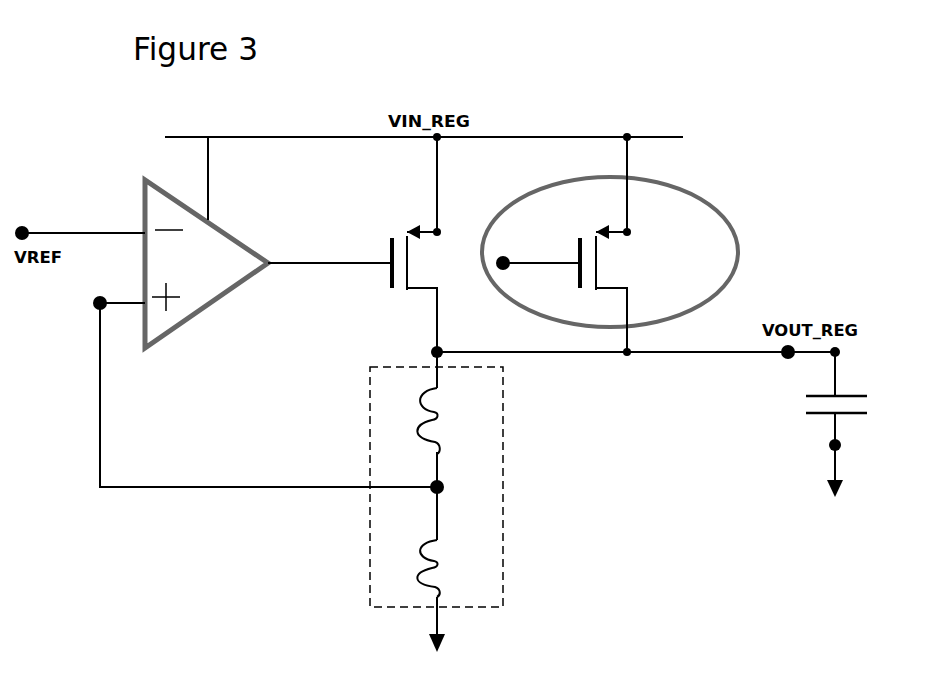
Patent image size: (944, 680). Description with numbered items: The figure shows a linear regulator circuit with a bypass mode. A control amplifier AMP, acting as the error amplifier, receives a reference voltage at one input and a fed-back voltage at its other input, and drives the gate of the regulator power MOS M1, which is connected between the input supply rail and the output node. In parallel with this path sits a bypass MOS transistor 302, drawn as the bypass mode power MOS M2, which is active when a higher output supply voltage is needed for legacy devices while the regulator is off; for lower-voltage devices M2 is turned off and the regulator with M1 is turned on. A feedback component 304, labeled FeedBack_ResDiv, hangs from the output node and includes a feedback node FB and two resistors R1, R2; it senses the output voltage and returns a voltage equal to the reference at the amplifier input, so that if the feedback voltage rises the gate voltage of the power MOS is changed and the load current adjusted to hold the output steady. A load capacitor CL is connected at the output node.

The bypass MOS transistor 302 is at (669, 233).
The feedback component 304 is at (434, 502).
The regulator power MOS M1 is at (423, 244).
The bypass mode power MOS M2 is at (611, 244).
The resistor R1 is at (447, 421).
The resistor R2 is at (443, 568).
The load capacitor CL is at (836, 446).
The control amplifier AMP is at (206, 242).